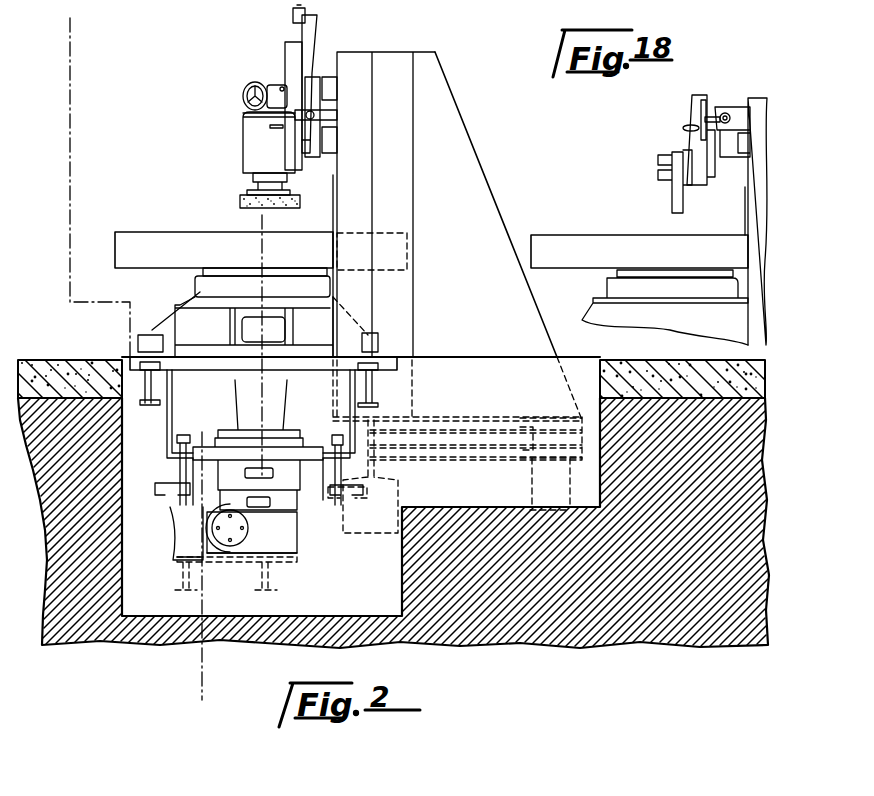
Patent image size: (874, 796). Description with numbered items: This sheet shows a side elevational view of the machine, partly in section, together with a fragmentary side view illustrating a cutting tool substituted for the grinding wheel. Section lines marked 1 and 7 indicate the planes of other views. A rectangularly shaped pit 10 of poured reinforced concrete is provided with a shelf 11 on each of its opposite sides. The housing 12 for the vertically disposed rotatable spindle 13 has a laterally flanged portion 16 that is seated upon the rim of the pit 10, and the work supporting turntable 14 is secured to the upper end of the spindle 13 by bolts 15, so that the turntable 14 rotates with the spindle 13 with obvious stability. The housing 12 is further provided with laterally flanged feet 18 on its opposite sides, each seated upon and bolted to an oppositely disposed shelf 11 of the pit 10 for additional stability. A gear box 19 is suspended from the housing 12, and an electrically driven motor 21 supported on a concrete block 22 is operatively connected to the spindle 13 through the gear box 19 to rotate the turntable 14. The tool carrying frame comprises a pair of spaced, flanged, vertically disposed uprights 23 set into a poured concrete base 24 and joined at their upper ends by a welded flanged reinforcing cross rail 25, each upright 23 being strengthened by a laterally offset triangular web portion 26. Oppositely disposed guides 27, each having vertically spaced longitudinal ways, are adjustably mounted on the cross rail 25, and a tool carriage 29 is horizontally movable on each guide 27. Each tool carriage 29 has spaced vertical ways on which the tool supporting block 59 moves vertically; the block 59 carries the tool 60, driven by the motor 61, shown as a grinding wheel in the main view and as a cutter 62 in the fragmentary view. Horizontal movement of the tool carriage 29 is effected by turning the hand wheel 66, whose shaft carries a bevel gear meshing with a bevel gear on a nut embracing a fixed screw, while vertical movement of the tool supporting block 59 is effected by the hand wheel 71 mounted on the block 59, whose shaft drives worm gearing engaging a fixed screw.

In FIG. 2, the section line 1 is at (82, 37).
In FIG. 2, the section line 7 is at (269, 216).
In FIG. 2, the pit 10 is at (373, 576).
In FIG. 2, the shelf 11 is at (173, 463).
In FIG. 2, the housing 12 is at (239, 377).
In FIG. 18, the housing 12 is at (713, 328).
In FIG. 2, the spindle 13 is at (277, 405).
In FIG. 2, the work supporting turntable 14 is at (187, 260).
In FIG. 18, the work supporting turntable 14 is at (660, 260).
In FIG. 2, the bolts 15 is at (150, 330).
In FIG. 2, the laterally flanged portion 16 is at (140, 345).
In FIG. 2, the laterally flanged feet 18 is at (193, 443).
In FIG. 2, the gear box 19 is at (236, 551).
In FIG. 2, the electrically driven motor 21 is at (240, 537).
In FIG. 2, the concrete block 22 is at (230, 580).
In FIG. 2, the uprights 23 is at (403, 93).
In FIG. 2, the poured concrete base 24 is at (62, 358).
In FIG. 2, the cross rail 25 is at (337, 118).
In FIG. 18, the cross rail 25 is at (758, 165).
In FIG. 2, the triangular web portion 26 is at (470, 273).
In FIG. 2, the guides 27 is at (310, 153).
In FIG. 2, the tool carriage 29 is at (307, 25).
In FIG. 18, the tool carriage 29 is at (705, 95).
In FIG. 2, the tool supporting block 59 is at (288, 50).
In FIG. 18, the tool supporting block 59 is at (692, 110).
In FIG. 2, the tool 60 is at (240, 200).
In FIG. 2, the motor 61 is at (273, 151).
In FIG. 18, the cutter 62 is at (672, 193).
In FIG. 2, the hand wheel 66 is at (243, 113).
In FIG. 2, the hand wheel 71 is at (243, 90).
In FIG. 18, the hand wheel 71 is at (683, 127).